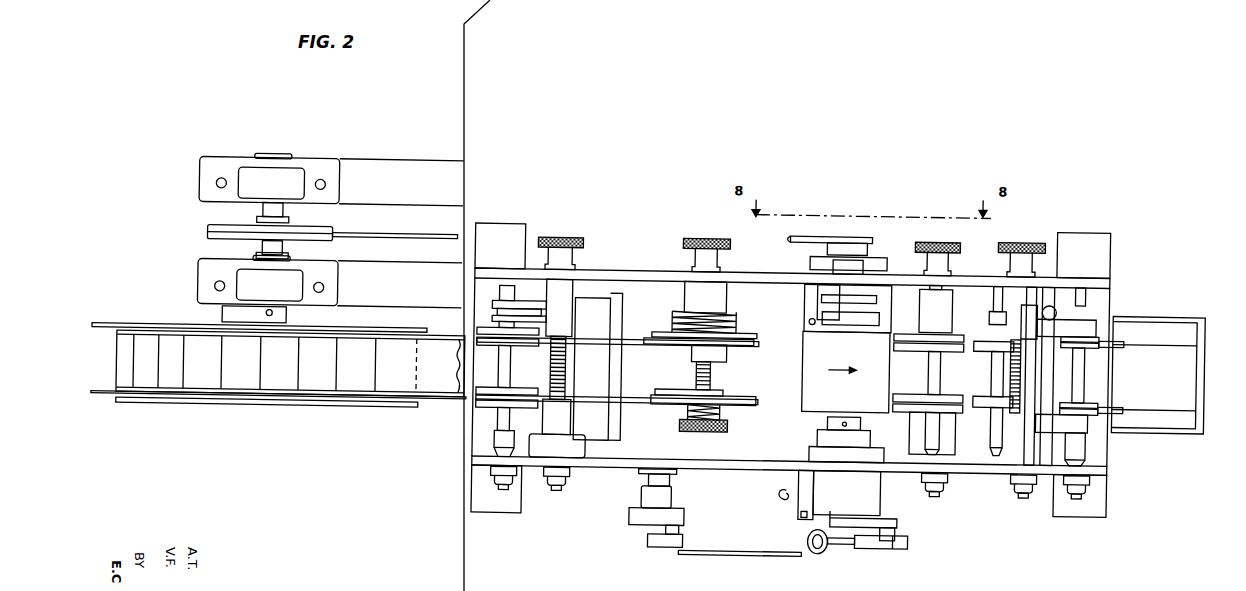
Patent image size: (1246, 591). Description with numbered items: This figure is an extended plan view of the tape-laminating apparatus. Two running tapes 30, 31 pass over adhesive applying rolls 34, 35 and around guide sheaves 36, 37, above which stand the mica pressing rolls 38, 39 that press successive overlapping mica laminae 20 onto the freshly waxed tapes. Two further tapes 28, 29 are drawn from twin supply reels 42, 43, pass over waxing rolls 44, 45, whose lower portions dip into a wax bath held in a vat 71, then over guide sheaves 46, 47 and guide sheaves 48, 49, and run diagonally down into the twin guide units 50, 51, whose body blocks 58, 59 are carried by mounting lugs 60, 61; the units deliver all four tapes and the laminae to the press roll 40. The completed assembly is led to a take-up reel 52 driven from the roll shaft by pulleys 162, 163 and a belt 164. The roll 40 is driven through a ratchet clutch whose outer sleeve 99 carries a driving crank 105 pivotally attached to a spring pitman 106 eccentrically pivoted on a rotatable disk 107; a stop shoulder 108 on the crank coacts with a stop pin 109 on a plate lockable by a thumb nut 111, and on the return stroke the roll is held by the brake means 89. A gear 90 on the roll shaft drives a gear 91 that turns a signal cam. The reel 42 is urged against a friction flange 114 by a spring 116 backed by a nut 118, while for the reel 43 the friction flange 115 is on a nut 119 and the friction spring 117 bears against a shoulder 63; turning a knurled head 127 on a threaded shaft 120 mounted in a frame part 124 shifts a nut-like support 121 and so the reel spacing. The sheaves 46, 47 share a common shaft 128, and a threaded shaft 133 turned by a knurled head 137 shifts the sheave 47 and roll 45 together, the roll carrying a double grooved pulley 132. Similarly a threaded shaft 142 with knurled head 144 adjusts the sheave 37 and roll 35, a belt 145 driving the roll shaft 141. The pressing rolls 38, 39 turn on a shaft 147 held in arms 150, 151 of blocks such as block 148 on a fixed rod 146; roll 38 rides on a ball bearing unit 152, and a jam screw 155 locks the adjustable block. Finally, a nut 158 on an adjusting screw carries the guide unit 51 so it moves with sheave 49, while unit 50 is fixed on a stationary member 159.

The mica lamina 20 is at (215, 386).
The tape 28 is at (320, 399).
The tape 29 is at (170, 337).
The running tape 30 is at (961, 414).
The running tape 31 is at (1125, 336).
The waxing or adhesive applying roll 34 is at (1000, 397).
The waxing or adhesive applying roll 35 is at (1018, 363).
The guide sheave 36 is at (1130, 420).
The guide sheave 37 is at (1124, 333).
The mica pressing roll 38 is at (1092, 393).
The mica pressing roll 39 is at (1092, 340).
The press roll 40 is at (820, 408).
The tape supply reel 42 is at (741, 403).
The tape supply reel 43 is at (758, 332).
The waxing or adhesive applying roll 44 is at (568, 403).
The waxing or adhesive applying roll 45 is at (570, 323).
The guide sheave 46 is at (500, 408).
The guide sheave 47 is at (498, 330).
The guide sheave 48 is at (947, 440).
The guide sheave 49 is at (953, 311).
The guide unit 50 is at (896, 388).
The guide unit 51 is at (896, 344).
The take-up reel 52 is at (168, 412).
The body block 58 is at (889, 402).
The body block 59 is at (897, 330).
The side lug 60 is at (916, 443).
The mounting lug 61 is at (918, 303).
The shoulder 63 is at (673, 318).
The vat 71 is at (615, 359).
The brake means 89 is at (850, 320).
The gear 90 is at (872, 253).
The gear 91 is at (814, 257).
The outer sleeve 99 is at (885, 499).
The driving crank 105 is at (899, 523).
The spring pitman 106 is at (858, 553).
The rotatable disk 107 is at (636, 512).
The stop shoulder 108 is at (833, 513).
The stop pin 109 is at (806, 513).
The thumb nut 111 is at (786, 488).
The friction flange 114 is at (690, 387).
The friction flange 115 is at (686, 349).
The spring 116 is at (690, 410).
The friction spring 117 is at (725, 314).
The nut 118 is at (706, 428).
The nut 119 is at (722, 352).
The shaft 120 is at (714, 377).
The nut-like support 121 is at (738, 312).
The frame part 124 is at (696, 293).
The knurled head 127 is at (694, 236).
The common shaft 128 is at (505, 370).
The double grooved pulley 132 is at (496, 304).
The threaded shaft 133 is at (555, 386).
The knurled head 137 is at (563, 237).
The shaft 141 is at (1000, 466).
The threaded shaft 142 is at (1042, 410).
The knurled head 144 is at (1016, 234).
The belt 145 is at (992, 312).
The rod 146 is at (978, 360).
The shaft 147 is at (1090, 437).
The block 148 is at (1050, 468).
The arm 150 is at (1083, 460).
The arm 151 is at (1097, 312).
The ball bearing unit 152 is at (952, 236).
The jam screw 155 is at (1051, 296).
The nut 158 is at (952, 300).
The stationary member 159 is at (950, 466).
The pulley 162 is at (858, 233).
The pulley 163 is at (213, 233).
The belt 164 is at (433, 236).